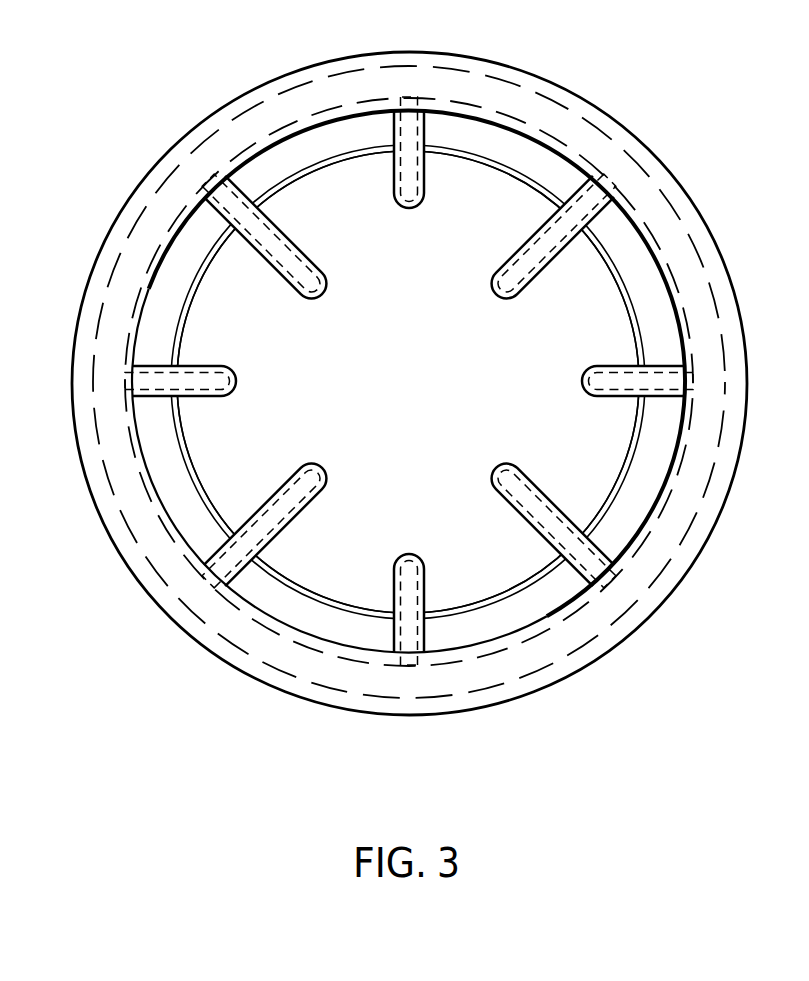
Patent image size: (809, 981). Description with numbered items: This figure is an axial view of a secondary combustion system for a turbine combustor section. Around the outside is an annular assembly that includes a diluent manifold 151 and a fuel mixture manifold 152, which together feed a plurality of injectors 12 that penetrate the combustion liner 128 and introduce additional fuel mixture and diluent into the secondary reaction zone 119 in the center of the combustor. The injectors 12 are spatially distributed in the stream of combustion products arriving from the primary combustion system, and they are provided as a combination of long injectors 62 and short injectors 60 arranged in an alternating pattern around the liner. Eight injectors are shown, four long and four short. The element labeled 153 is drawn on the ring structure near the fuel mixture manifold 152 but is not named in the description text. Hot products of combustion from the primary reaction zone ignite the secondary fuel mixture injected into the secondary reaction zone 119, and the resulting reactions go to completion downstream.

The injector 12 is at (426, 195).
The short injector 60 is at (414, 212).
The long injector 62 is at (327, 296).
The secondary reaction zone 119 is at (603, 457).
The combustion liner 128 is at (643, 323).
The diluent manifold 151 is at (582, 93).
The fuel mixture manifold 152 is at (635, 142).
The inner edge of ring 153 is at (567, 252).